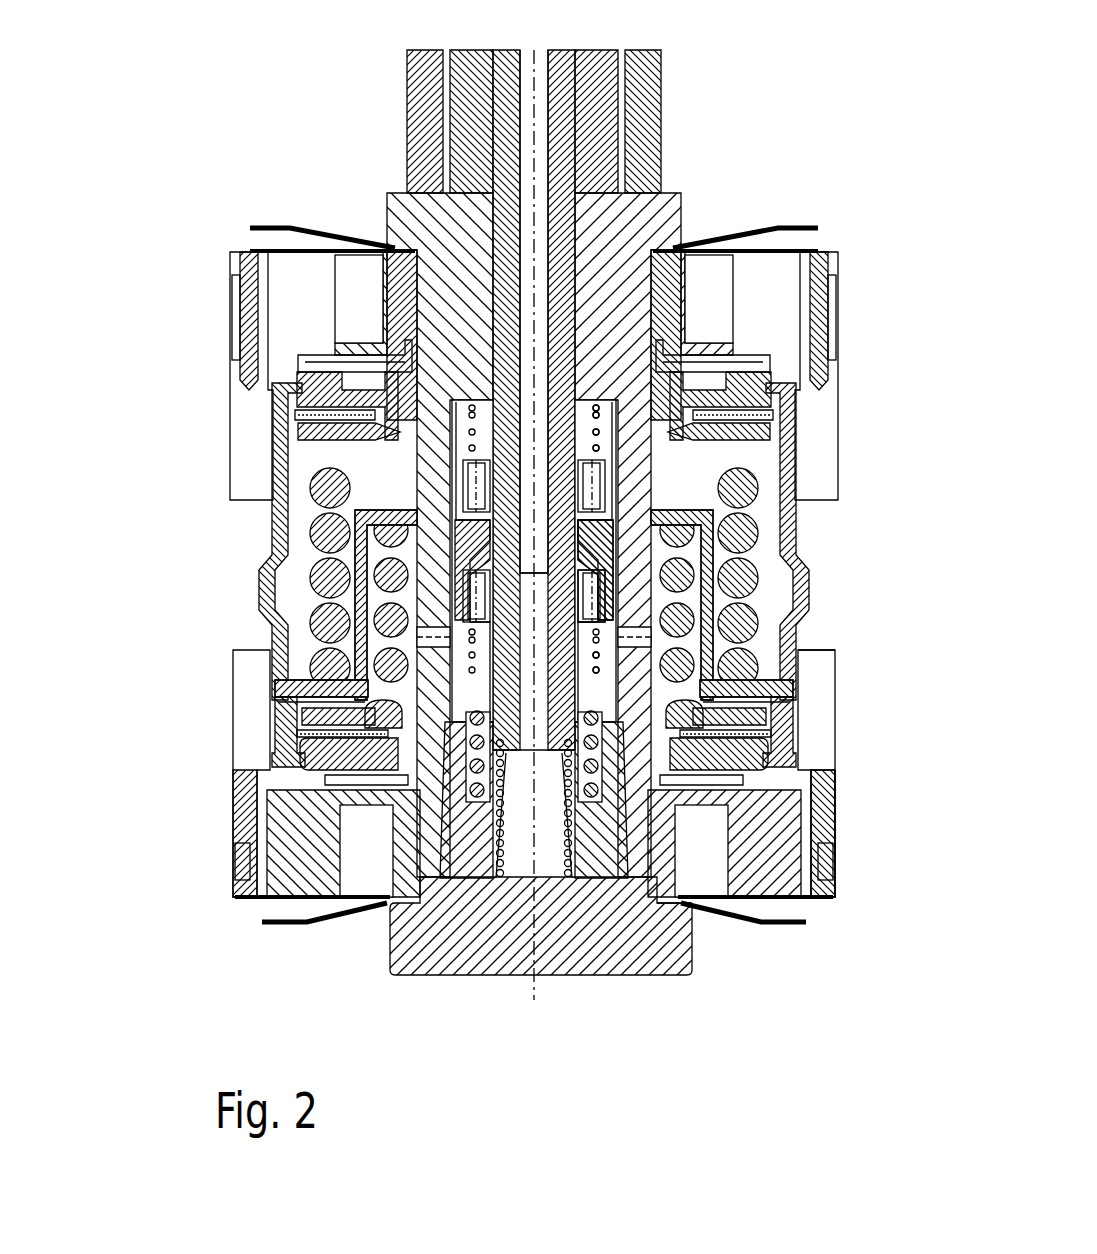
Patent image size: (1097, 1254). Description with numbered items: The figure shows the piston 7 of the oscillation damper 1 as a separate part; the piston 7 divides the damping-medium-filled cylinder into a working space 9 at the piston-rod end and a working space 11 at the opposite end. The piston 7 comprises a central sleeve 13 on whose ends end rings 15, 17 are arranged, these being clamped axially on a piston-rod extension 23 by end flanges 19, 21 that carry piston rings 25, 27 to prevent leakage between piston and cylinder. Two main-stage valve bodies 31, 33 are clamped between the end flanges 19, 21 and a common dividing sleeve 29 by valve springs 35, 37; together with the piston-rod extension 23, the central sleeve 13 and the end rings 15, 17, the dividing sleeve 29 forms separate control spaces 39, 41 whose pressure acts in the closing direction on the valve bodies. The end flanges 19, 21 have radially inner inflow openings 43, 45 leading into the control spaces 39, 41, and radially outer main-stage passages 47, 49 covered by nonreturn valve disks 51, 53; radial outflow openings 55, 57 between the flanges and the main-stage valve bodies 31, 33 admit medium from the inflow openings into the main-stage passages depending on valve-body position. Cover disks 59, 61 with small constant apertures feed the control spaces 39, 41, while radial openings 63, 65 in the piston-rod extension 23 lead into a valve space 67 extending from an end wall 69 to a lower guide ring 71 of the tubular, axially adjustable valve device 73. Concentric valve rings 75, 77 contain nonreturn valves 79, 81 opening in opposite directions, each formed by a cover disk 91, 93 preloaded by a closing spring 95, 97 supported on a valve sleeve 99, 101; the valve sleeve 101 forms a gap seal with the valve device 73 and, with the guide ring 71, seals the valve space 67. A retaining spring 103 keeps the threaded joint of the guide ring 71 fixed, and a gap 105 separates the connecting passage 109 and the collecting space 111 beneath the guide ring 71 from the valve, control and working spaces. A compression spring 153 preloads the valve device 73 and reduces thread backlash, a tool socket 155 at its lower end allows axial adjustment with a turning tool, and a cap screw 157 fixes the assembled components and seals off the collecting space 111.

The oscillation damper 1 is at (165, 918).
The piston 7 is at (803, 100).
The working space 9 is at (360, 167).
The working space 11 is at (352, 955).
The central sleeve 13 is at (258, 572).
The end ring 15 is at (335, 413).
The end ring 17 is at (330, 745).
The end flange 19 is at (305, 262).
The end flange 21 is at (265, 822).
The piston-rod extension 23 is at (400, 205).
The piston ring 25 is at (322, 380).
The piston ring 27 is at (240, 856).
The dividing sleeve 29 is at (372, 545).
The main-stage valve body 31 is at (298, 395).
The main-stage valve body 33 is at (318, 778).
The valve spring 35 is at (318, 480).
The valve spring 37 is at (362, 660).
The control space 39 is at (300, 508).
The control space 41 is at (278, 692).
The inflow opening 43 is at (700, 270).
The inflow opening 45 is at (735, 900).
The main-stage passage 47 is at (820, 755).
The main-stage passage 49 is at (272, 622).
The nonreturn valve disk 51 is at (758, 262).
The nonreturn valve disk 53 is at (805, 880).
The radial outflow opening 55 is at (815, 397).
The radial outflow opening 57 is at (785, 792).
The cover disk 59 is at (705, 352).
The cover disk 61 is at (748, 815).
The radial opening 63 is at (660, 420).
The radial opening 65 is at (630, 655).
The valve space 67 is at (600, 550).
The end wall 69 is at (626, 385).
The guide ring 71 is at (692, 928).
The valve device 73 is at (478, 800).
The valve ring 75 is at (725, 475).
The valve ring 77 is at (718, 580).
The nonreturn valve 79 is at (612, 430).
The nonreturn valve 81 is at (655, 640).
The cover disk 91 is at (770, 372).
The cover disk 93 is at (615, 592).
The closing spring 95 is at (762, 343).
The closing spring 97 is at (652, 672).
The valve sleeve 99 is at (590, 400).
The valve sleeve 101 is at (650, 702).
The retaining spring 103 is at (497, 868).
The gap 105 is at (440, 58).
The connecting passage 109 is at (527, 125).
The collecting space 111 is at (550, 855).
The compression spring 153 is at (470, 878).
The tool socket 155 is at (607, 870).
The cap screw 157 is at (557, 950).